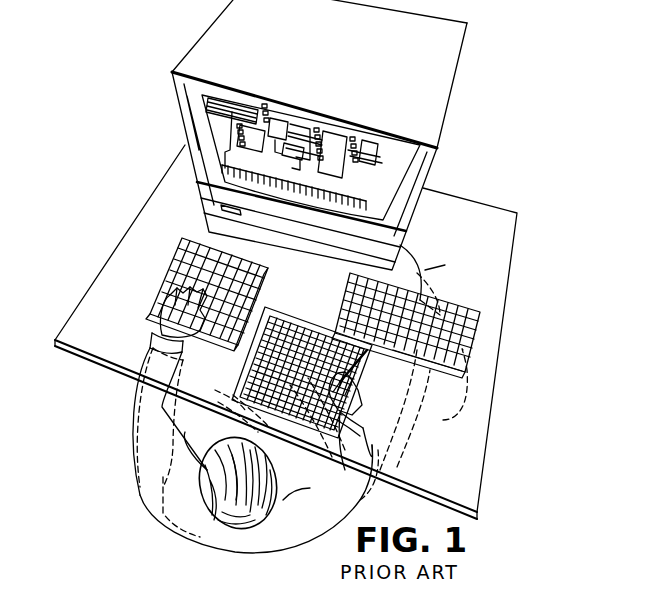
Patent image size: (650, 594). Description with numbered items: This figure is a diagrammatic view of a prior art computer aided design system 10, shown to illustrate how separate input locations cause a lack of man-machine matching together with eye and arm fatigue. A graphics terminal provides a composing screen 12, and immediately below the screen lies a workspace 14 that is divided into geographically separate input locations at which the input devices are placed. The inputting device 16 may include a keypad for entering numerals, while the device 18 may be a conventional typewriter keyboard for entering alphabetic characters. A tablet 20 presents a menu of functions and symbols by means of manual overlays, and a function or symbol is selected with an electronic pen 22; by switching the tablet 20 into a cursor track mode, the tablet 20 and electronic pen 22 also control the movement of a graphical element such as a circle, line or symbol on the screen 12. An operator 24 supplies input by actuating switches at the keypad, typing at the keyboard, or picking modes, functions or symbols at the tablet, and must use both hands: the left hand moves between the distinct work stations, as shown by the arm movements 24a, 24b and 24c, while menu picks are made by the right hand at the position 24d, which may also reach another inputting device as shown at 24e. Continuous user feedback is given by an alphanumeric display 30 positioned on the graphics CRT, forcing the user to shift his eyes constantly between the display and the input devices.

The computer workstation 10 is at (475, 40).
The composing screen 12 is at (400, 167).
The workspace 14 is at (466, 242).
The inputting device 16 is at (200, 240).
The device 18 is at (440, 302).
The tablet 20 is at (298, 316).
The electronic pen 22 is at (370, 388).
The operator 24 is at (138, 518).
The arm movement 24a is at (150, 352).
The arm movement 24b is at (183, 360).
The arm movement 24c is at (230, 400).
The right hand position 24d is at (332, 457).
The right hand position 24e is at (380, 448).
The alphanumeric display 30 is at (232, 100).